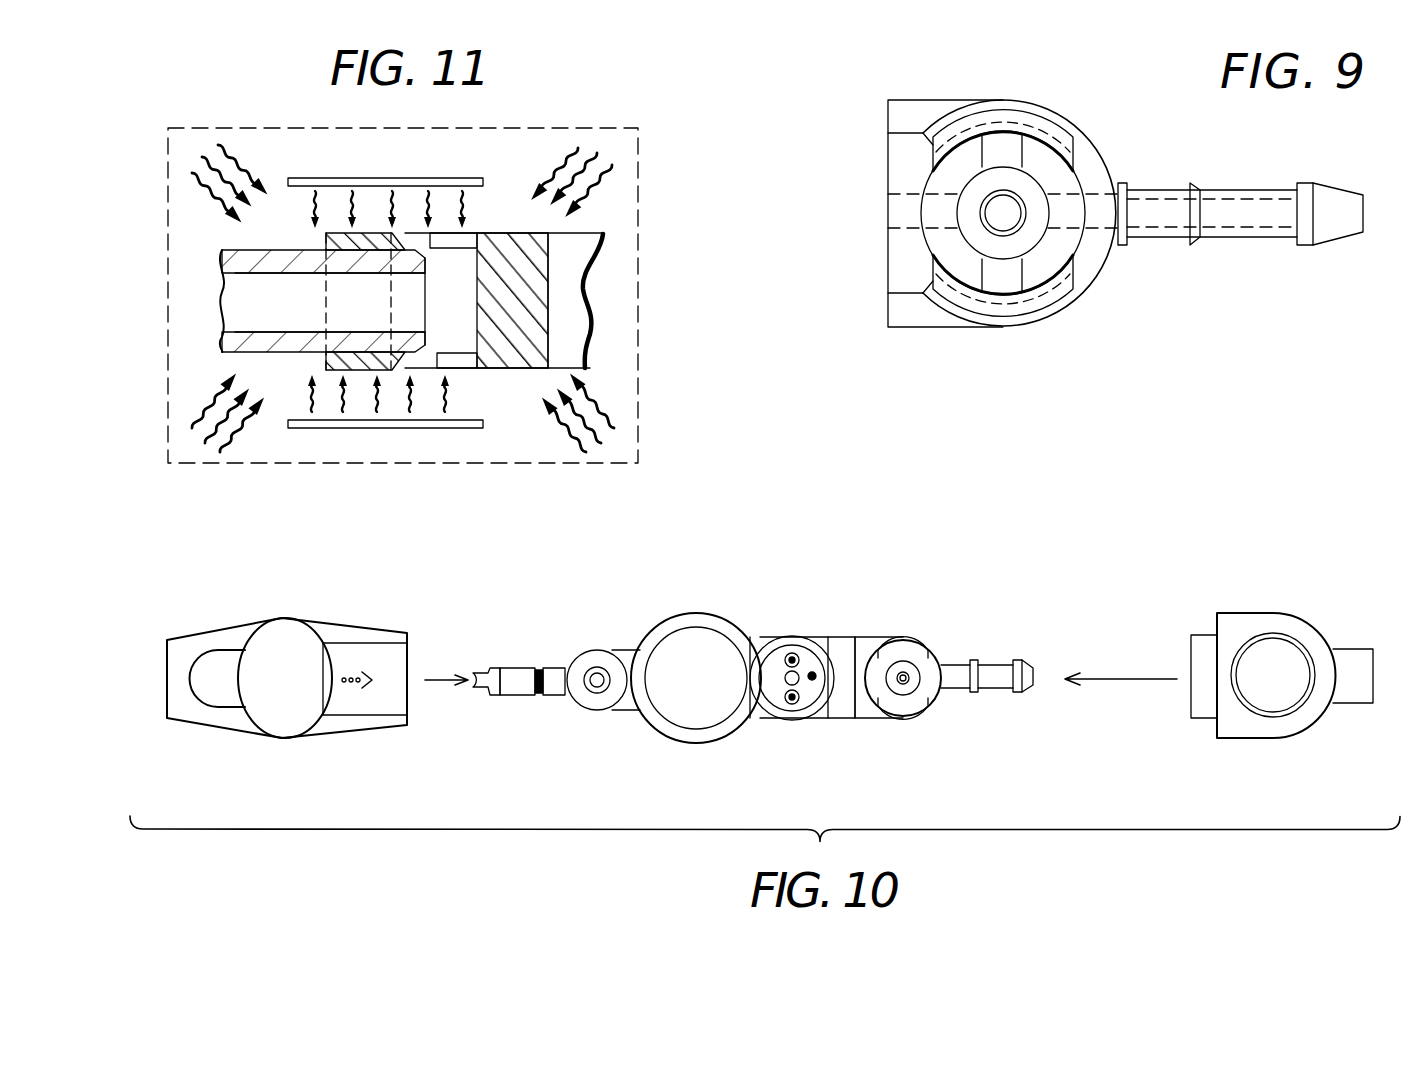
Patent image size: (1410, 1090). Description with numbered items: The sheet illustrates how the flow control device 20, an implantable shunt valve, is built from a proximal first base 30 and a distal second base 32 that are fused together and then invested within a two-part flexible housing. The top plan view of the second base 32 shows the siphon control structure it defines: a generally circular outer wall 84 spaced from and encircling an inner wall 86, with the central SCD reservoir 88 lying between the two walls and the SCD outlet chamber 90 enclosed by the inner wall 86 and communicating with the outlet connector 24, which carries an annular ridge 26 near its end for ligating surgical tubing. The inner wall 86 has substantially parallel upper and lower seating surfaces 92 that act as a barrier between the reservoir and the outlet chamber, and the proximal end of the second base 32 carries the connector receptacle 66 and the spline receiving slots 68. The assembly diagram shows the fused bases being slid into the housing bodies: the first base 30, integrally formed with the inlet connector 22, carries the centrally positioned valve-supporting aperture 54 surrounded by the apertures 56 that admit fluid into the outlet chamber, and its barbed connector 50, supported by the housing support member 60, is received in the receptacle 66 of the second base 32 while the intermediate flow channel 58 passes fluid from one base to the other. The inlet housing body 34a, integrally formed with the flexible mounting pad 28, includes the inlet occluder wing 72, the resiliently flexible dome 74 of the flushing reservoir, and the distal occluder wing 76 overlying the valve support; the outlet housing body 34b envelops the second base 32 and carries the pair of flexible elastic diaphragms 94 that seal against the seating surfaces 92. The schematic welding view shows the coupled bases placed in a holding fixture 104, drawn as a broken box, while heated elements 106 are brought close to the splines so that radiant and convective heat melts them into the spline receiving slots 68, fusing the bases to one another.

In FIG. 10, the flow control device 20 is at (1105, 579).
In FIG. 10, the inlet connector 22 is at (508, 668).
In FIG. 9, the outlet connector 24 is at (1236, 248).
In FIG. 10, the outlet connector 24 is at (995, 666).
In FIG. 9, the annular ridge 26 is at (1302, 249).
In FIG. 10, the mounting pad 28 is at (282, 674).
In FIG. 11, the first base 30 is at (210, 349).
In FIG. 10, the first base 30 is at (655, 735).
In FIG. 11, the second base 32 is at (609, 227).
In FIG. 9, the second base 32 is at (996, 202).
In FIG. 10, the second base 32 is at (925, 635).
In FIG. 10, the inlet housing body 34a is at (285, 616).
In FIG. 10, the outlet housing body 34b is at (1294, 640).
In FIG. 11, the barbed connector 50 is at (345, 360).
In FIG. 10, the valve-supporting aperture 54 is at (793, 655).
In FIG. 10, the apertures 56 is at (797, 658).
In FIG. 11, the intermediate flow channel 58 is at (268, 306).
In FIG. 10, the housing support member 60 is at (846, 698).
In FIG. 11, the connector receptacle 66 is at (345, 240).
In FIG. 9, the connector receptacle 66 is at (888, 232).
In FIG. 9, the spline receiving slots 68 is at (904, 178).
In FIG. 10, the inlet occluder wing 72 is at (215, 660).
In FIG. 10, the dome 74 is at (278, 702).
In FIG. 10, the distal occluder wing 76 is at (373, 705).
In FIG. 9, the outer wall 84 is at (1087, 272).
In FIG. 9, the inner wall 86 is at (1002, 179).
In FIG. 9, the SCD reservoir 88 is at (966, 273).
In FIG. 9, the SCD outlet chamber 90 is at (1005, 215).
In FIG. 9, the seating surfaces 92 is at (980, 231).
In FIG. 10, the diaphragms 94 is at (1278, 685).
In FIG. 11, the holding fixture 104 is at (646, 307).
In FIG. 11, the heated element 106 is at (405, 178).